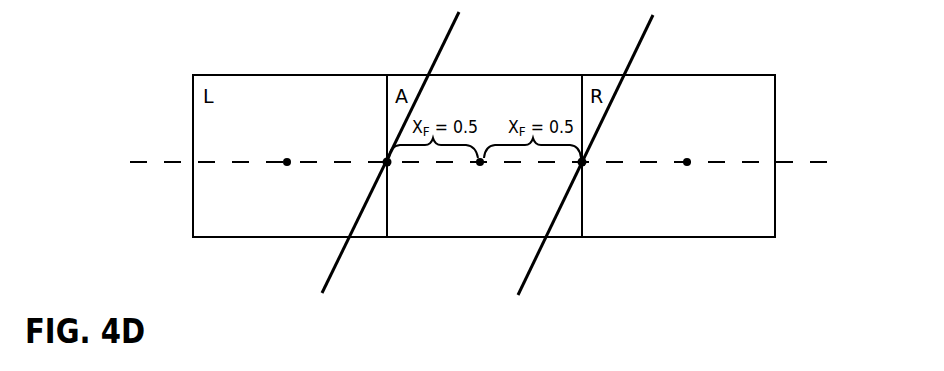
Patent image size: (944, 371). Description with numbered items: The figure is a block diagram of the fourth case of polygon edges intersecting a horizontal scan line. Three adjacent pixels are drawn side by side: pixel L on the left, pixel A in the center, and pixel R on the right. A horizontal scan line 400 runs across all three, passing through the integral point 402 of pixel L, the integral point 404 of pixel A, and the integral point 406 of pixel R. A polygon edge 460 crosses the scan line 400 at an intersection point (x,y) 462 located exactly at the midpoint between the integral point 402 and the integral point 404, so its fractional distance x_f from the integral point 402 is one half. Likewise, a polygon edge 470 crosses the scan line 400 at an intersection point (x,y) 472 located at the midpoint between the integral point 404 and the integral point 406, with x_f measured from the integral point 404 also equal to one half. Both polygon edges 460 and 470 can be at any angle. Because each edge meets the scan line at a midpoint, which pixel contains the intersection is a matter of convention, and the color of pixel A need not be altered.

The horizontal scan line 400 is at (485, 147).
The integral point of pixel L 402 is at (287, 160).
The integral point of pixel A 404 is at (481, 165).
The integral point of pixel R 406 is at (687, 160).
The polygon edge 460 is at (330, 276).
The intersection point (x,y) 462 is at (389, 165).
The polygon edge 470 is at (535, 265).
The intersection point (x,y) 472 is at (584, 165).